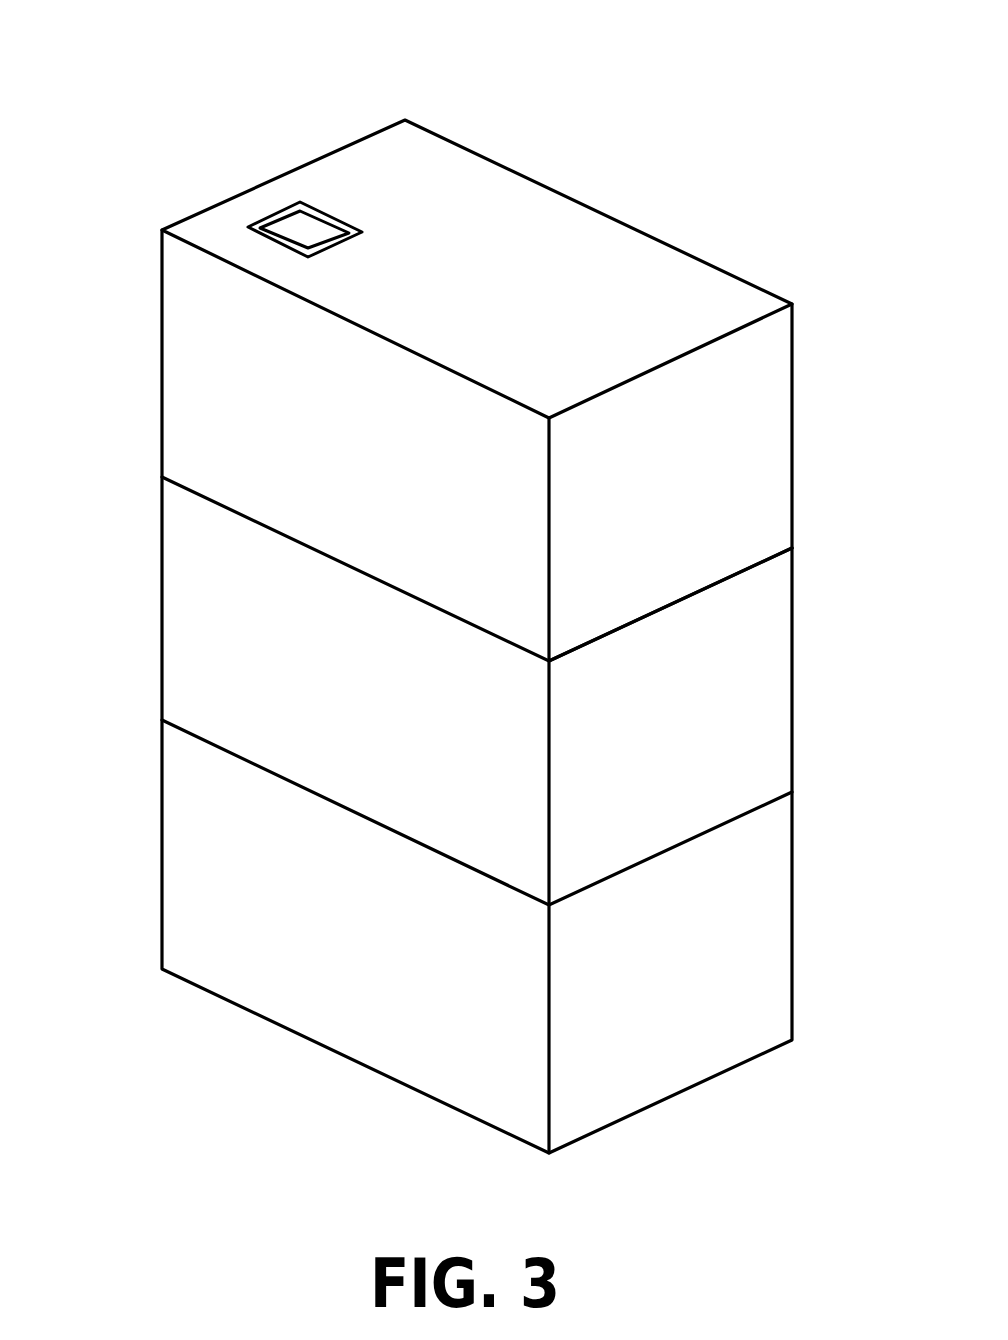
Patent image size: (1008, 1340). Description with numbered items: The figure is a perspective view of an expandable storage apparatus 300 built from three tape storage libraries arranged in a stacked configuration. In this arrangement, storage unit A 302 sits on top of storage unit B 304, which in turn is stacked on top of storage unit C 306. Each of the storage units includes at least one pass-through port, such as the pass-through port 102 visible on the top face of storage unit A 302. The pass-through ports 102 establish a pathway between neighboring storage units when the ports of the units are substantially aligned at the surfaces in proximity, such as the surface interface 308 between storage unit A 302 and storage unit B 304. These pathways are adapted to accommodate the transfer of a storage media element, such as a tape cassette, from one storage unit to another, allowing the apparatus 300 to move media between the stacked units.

The expandable storage apparatus 300 is at (281, 62).
The pass-through port 102 is at (305, 226).
The storage unit A 302 is at (162, 375).
The storage unit B 304 is at (162, 587).
The storage unit C 306 is at (162, 843).
The surface interface 308 is at (653, 615).